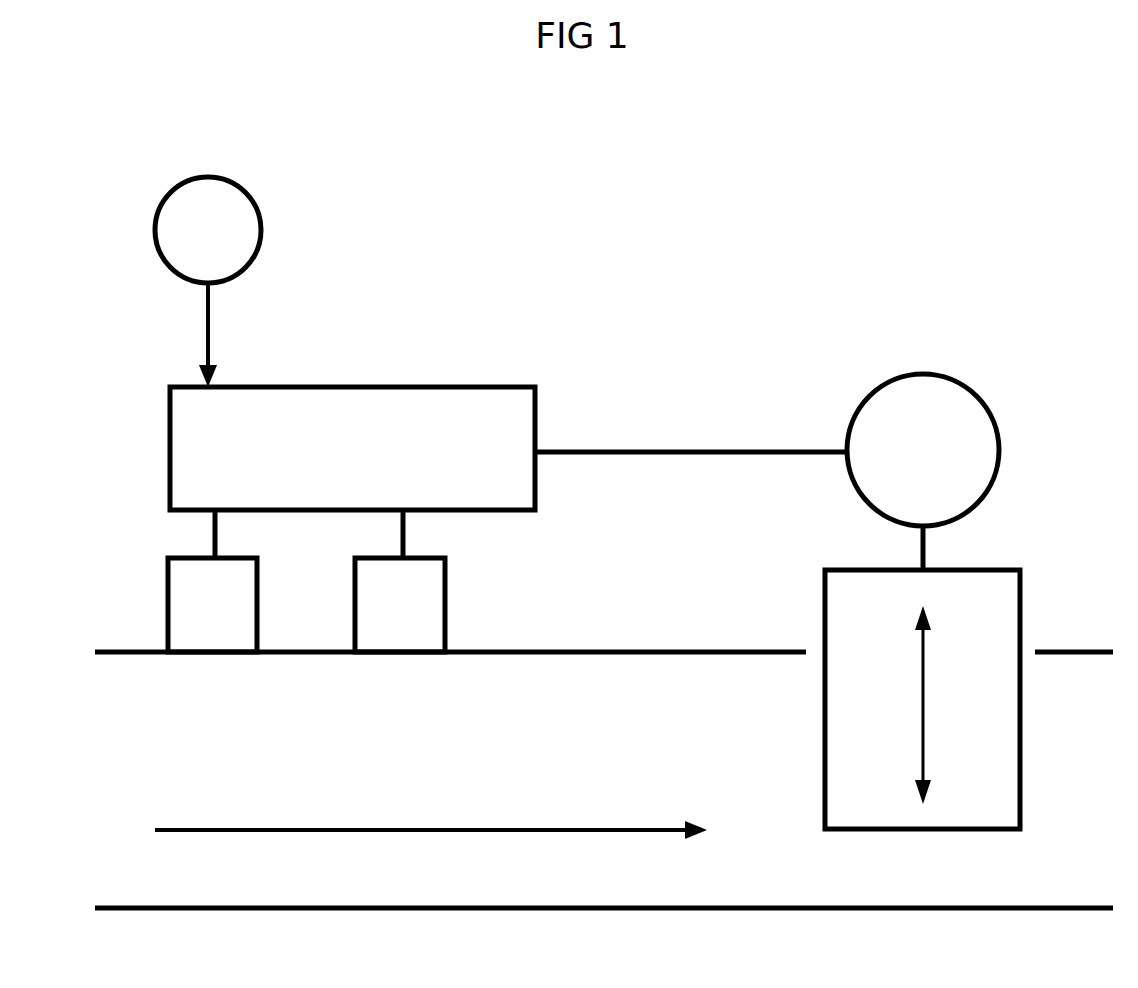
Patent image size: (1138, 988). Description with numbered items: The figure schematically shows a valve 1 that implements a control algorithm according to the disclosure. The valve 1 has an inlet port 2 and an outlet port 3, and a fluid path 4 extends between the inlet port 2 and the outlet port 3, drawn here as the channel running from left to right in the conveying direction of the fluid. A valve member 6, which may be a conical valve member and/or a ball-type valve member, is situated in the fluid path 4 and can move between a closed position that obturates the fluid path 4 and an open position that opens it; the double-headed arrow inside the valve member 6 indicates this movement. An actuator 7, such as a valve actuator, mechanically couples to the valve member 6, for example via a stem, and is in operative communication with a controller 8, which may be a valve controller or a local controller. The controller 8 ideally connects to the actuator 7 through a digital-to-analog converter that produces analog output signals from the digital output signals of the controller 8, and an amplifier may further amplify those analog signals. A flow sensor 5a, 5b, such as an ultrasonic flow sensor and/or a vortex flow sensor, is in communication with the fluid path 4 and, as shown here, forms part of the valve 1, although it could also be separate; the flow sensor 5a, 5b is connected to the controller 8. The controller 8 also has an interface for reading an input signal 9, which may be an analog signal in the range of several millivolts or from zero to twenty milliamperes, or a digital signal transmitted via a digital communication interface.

The valve 1 is at (1052, 128).
The inlet port 2 is at (598, 780).
The outlet port 3 is at (1077, 730).
The fluid path 4 is at (431, 852).
The flow sensor 5a is at (212, 581).
The flow sensor 5b is at (400, 581).
The valve member 6 is at (922, 699).
The actuator 7 is at (767, 472).
The controller 8 is at (352, 448).
The input signal 9 is at (208, 282).